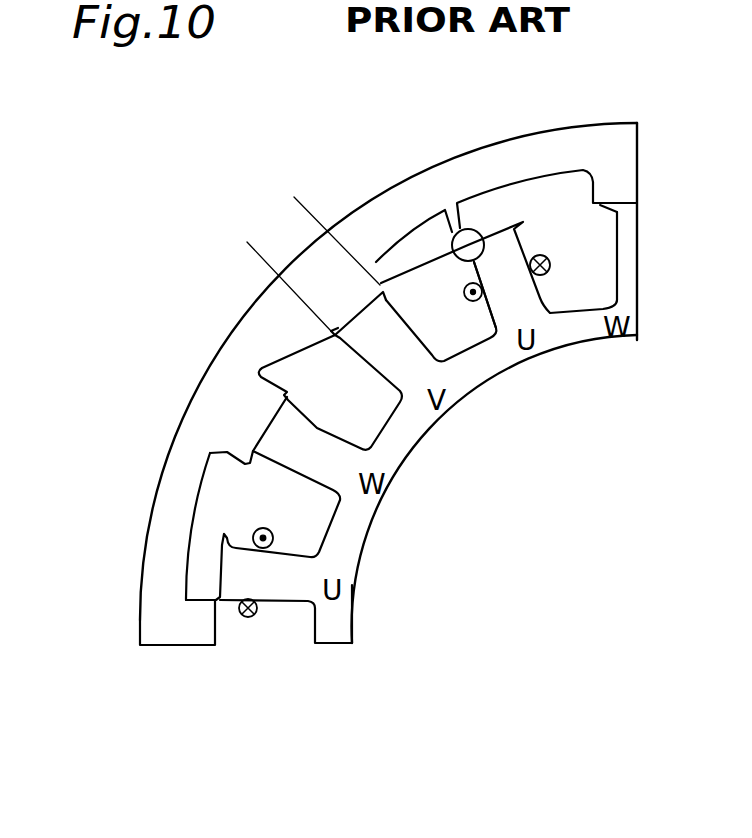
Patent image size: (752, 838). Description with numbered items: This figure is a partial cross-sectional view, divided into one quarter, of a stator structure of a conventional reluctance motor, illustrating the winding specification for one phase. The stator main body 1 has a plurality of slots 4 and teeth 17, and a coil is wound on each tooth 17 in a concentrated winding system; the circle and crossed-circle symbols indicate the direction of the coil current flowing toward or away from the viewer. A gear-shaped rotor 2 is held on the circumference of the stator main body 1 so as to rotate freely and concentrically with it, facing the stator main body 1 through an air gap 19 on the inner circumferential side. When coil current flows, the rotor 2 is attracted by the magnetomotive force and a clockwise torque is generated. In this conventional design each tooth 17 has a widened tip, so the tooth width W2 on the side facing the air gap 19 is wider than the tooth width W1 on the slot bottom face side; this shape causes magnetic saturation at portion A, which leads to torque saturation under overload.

The stator main body 1 is at (365, 555).
The rotor 2 is at (578, 142).
The slot 4 is at (495, 333).
The tooth 17 is at (284, 583).
The air gap 19 is at (213, 523).
The portion A is at (473, 262).
The tooth width on slot bottom face side W1 is at (428, 351).
The tooth width on air gap side W2 is at (299, 198).